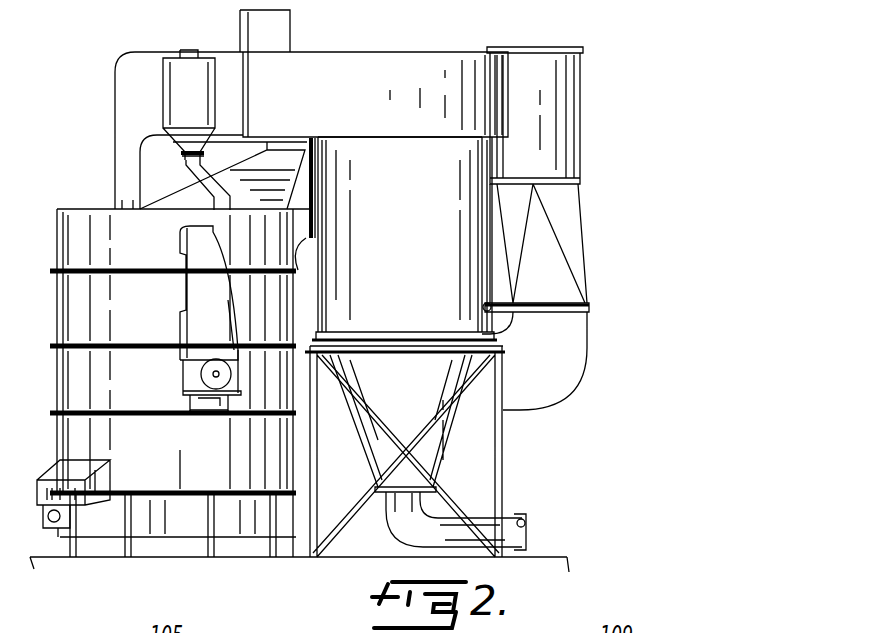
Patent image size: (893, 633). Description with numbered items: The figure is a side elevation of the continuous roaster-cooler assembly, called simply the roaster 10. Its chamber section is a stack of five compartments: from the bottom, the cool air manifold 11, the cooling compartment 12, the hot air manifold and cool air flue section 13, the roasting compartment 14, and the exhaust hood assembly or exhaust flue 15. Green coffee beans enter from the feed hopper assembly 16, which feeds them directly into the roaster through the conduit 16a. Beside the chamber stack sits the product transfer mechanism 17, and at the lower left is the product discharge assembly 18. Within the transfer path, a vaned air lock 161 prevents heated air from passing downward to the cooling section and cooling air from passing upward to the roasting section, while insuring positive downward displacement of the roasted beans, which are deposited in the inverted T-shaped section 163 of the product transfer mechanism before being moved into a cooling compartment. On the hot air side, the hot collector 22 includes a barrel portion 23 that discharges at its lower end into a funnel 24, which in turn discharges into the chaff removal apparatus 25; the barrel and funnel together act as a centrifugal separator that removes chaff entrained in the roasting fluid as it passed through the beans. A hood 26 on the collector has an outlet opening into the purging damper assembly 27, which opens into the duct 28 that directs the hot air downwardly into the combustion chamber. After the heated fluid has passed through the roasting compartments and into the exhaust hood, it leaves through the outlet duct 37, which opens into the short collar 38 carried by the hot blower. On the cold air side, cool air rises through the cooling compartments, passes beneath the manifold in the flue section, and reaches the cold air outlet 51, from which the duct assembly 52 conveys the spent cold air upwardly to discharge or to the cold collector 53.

The roaster 10 is at (103, 108).
The cool air manifold 11 is at (175, 525).
The cooling compartment 12 is at (66, 443).
The hot air manifold and cool air flue section 13 is at (66, 382).
The roasting compartment 14 is at (66, 308).
The exhaust hood assembly 15 is at (66, 243).
The feed hopper assembly 16 is at (163, 76).
The conduit 16a is at (193, 178).
The product transfer mechanism 17 is at (181, 294).
The product discharge assembly 18 is at (36, 506).
The hot collector 22 is at (457, 45).
The barrel portion 23 is at (404, 238).
The funnel 24 is at (462, 458).
The chaff removal apparatus 25 is at (398, 526).
The hood 26 is at (345, 58).
The purging damper assembly 27 is at (226, 60).
The duct 28 is at (125, 170).
The outlet duct 37 is at (300, 270).
The collar 38 is at (316, 181).
The cold air outlet 51 is at (557, 373).
The duct assembly 52 is at (578, 262).
The cold collector 53 is at (572, 98).
The vaned air lock 161 is at (187, 378).
The inverted T-shaped section 163 is at (183, 414).